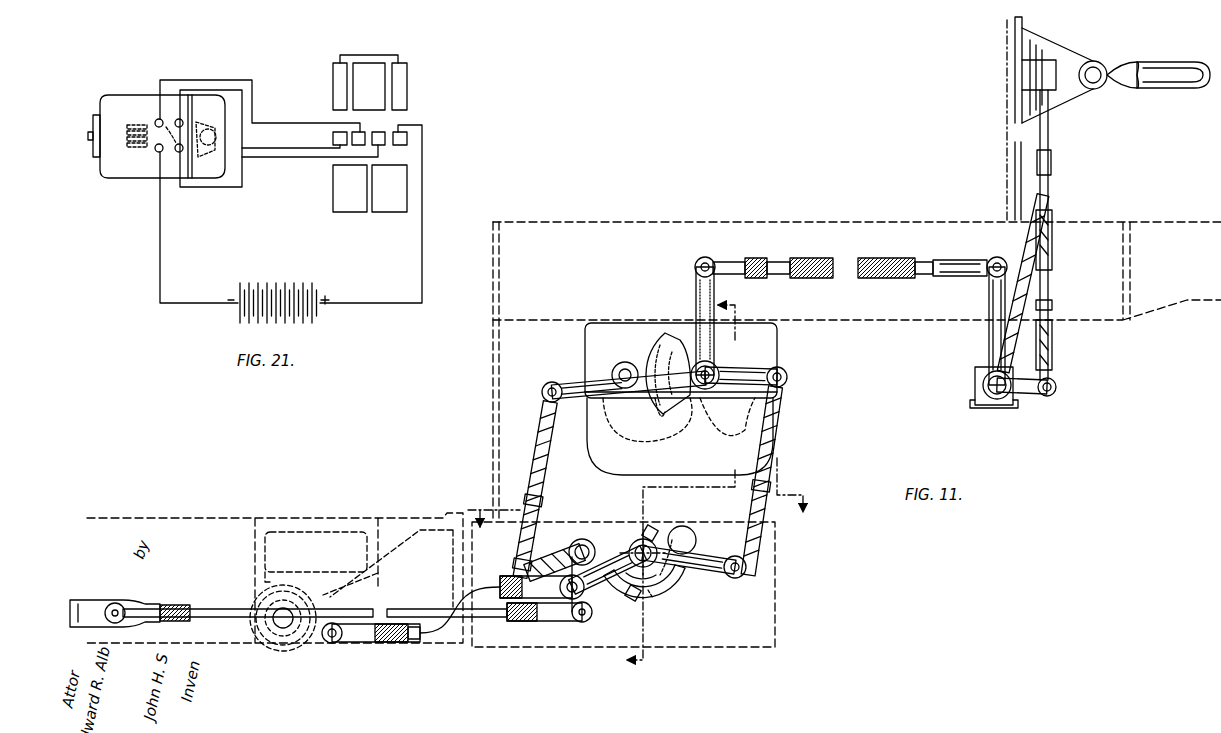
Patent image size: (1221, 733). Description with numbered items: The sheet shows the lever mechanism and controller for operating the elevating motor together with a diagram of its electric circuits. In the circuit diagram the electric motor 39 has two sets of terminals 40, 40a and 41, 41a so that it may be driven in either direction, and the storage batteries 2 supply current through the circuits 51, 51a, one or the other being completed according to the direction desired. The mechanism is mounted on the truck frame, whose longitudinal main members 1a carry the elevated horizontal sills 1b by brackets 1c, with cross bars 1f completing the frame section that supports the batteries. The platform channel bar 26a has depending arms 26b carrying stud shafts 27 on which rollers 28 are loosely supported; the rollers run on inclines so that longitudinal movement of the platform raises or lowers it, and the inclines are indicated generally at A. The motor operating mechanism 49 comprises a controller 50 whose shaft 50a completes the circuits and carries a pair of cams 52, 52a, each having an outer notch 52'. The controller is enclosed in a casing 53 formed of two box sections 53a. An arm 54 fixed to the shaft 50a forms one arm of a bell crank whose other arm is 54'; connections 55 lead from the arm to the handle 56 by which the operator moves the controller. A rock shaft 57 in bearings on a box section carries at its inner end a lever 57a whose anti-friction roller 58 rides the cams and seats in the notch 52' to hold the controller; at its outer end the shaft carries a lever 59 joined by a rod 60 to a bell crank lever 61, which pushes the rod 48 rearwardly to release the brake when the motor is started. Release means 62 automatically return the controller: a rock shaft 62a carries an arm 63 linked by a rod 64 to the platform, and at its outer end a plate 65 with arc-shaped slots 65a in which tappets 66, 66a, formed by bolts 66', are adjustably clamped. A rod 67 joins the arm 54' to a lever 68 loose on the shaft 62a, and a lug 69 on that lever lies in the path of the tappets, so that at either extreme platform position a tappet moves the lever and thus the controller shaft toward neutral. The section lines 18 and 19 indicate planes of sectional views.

In FIG. 21, the electric motor 39 is at (131, 93).
In FIG. 21, the terminal 40 is at (158, 118).
In FIG. 21, the terminal 40a is at (180, 118).
In FIG. 21, the terminal 41 is at (157, 152).
In FIG. 21, the terminal 41a is at (179, 152).
In FIG. 21, the circuit 51 is at (282, 121).
In FIG. 21, the circuit 51a is at (284, 158).
In FIG. 21, the storage batteries 2 is at (280, 284).
In FIG. 11, the main or side member 1a is at (186, 518).
In FIG. 11, the horizontal sill 1b is at (890, 222).
In FIG. 11, the bracket 1c is at (780, 467).
In FIG. 11, the cross bar 1f is at (492, 480).
In FIG. 11, the section line 18 is at (644, 505).
In FIG. 11, the section line 19 is at (667, 480).
In FIG. 11, the channel bar 26a is at (262, 550).
In FIG. 11, the depending arm 26b is at (260, 588).
In FIG. 11, the stud shaft 27 is at (272, 650).
In FIG. 11, the roller 28 is at (297, 650).
In FIG. 11, the rod 48 is at (168, 607).
In FIG. 11, the control mechanism 49 is at (809, 418).
In FIG. 11, the controller 50 is at (616, 462).
In FIG. 11, the controller shaft 50a is at (715, 370).
In FIG. 11, the cam 52 is at (659, 356).
In FIG. 11, the notch 52' is at (684, 394).
In FIG. 11, the cam 52a is at (706, 445).
In FIG. 11, the casing 53 is at (588, 445).
In FIG. 11, the box section 53a is at (602, 328).
In FIG. 11, the arm 54 is at (686, 316).
In FIG. 11, the arm 54' is at (761, 366).
In FIG. 11, the connections 55 is at (879, 279).
In FIG. 11, the handle 56 is at (1148, 92).
In FIG. 11, the rock shaft 57 is at (622, 362).
In FIG. 11, the lever 57a is at (668, 445).
In FIG. 11, the anti-friction roller 58 is at (648, 432).
In FIG. 11, the lever 59 is at (568, 385).
In FIG. 11, the rod 60 is at (533, 470).
In FIG. 11, the bell crank lever 61 is at (545, 560).
In FIG. 11, the release means 62 is at (660, 595).
In FIG. 11, the rock shaft 62a is at (648, 525).
In FIG. 11, the arm 63 is at (612, 560).
In FIG. 11, the rod 64 is at (386, 645).
In FIG. 11, the plate 65 is at (690, 605).
In FIG. 11, the arc-shaped slot 65a is at (614, 600).
In FIG. 11, the tappet 66 is at (680, 539).
In FIG. 11, the tappet 66a is at (631, 605).
In FIG. 11, the bolt 66' is at (660, 618).
In FIG. 11, the rod 67 is at (760, 486).
In FIG. 11, the lever 68 is at (735, 580).
In FIG. 11, the lug 69 is at (690, 578).
In FIG. 11, the axle housing A is at (395, 563).